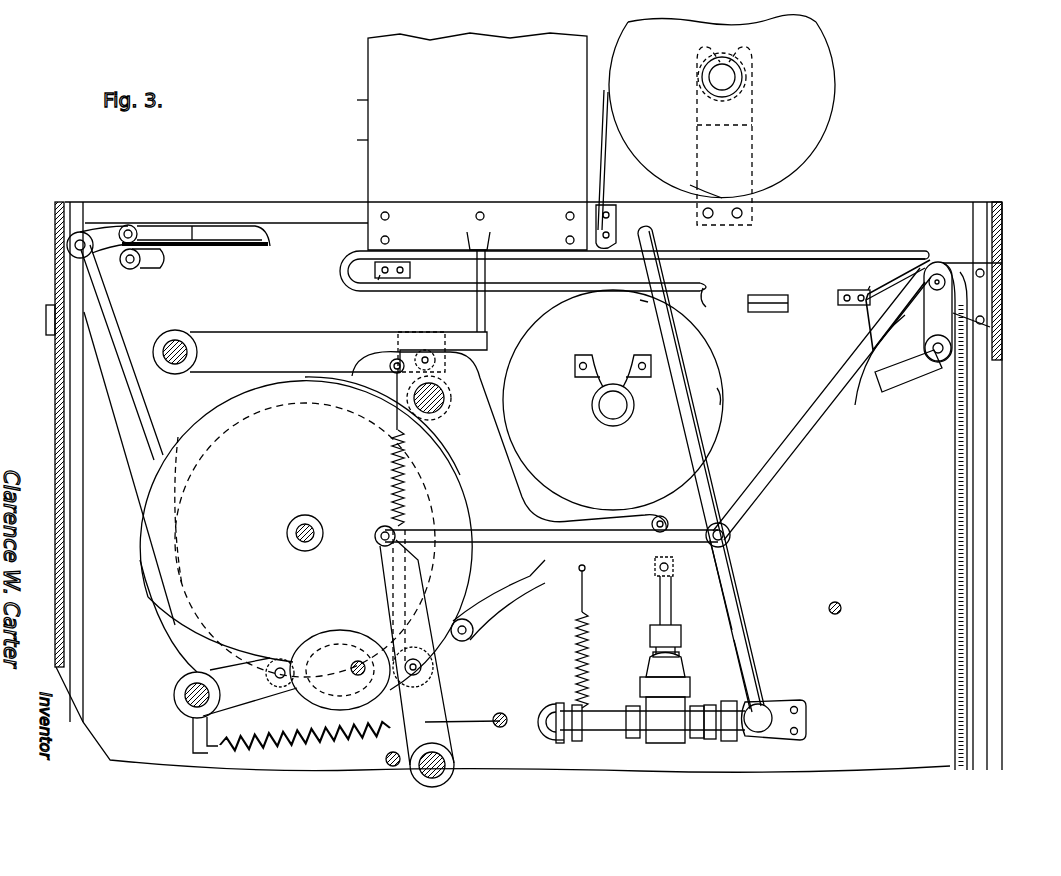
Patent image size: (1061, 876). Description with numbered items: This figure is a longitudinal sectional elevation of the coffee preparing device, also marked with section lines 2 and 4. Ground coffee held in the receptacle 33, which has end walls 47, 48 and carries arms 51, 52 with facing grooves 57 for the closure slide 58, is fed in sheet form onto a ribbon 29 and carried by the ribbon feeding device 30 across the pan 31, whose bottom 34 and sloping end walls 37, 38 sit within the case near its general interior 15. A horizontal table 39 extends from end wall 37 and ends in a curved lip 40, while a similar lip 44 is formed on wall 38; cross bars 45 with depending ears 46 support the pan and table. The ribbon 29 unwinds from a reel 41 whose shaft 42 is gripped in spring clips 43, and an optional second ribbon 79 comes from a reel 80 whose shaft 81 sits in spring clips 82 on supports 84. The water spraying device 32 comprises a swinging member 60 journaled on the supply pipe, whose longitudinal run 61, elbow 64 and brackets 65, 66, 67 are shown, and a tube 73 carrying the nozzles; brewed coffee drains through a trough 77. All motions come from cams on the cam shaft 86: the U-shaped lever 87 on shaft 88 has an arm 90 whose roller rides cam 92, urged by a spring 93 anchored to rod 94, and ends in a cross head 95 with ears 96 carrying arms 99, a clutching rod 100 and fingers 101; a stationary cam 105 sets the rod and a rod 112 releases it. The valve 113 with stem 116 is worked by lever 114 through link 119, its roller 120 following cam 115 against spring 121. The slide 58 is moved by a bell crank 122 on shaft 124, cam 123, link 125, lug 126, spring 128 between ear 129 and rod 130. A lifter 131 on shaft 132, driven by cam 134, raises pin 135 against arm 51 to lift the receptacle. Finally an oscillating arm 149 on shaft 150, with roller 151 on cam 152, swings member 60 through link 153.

The section line 2 is at (5, 215).
The section line 4 is at (760, 205).
The disc 15 is at (613, 400).
The ribbon 29 is at (420, 291).
The ribbon feeding device 30 is at (872, 338).
The pan 31 is at (840, 262).
The water spraying device 32 is at (750, 613).
The receptacle 33 is at (352, 100).
The bottom 34 is at (713, 305).
The end wall 37 is at (645, 300).
The end wall 38 is at (893, 260).
The table 39 is at (522, 260).
The curved lip 40 is at (338, 269).
The reel 41 is at (717, 388).
The shaft 42 is at (630, 416).
The spring clips 43 is at (592, 402).
The lip 44 is at (931, 258).
The cross bars 45 is at (410, 270).
The depending ears 46 is at (378, 280).
The end wall 47 is at (587, 124).
The end wall 48 is at (352, 140).
The arm 51 is at (425, 216).
The arm 52 is at (240, 228).
The grooves 57 is at (192, 226).
The slide 58 is at (258, 240).
The swinging member 60 is at (735, 578).
The longitudinal run 61 is at (606, 735).
The elbow 64 is at (541, 738).
The bracket 65 is at (800, 742).
The bracket 66 is at (720, 738).
The bracket 67 is at (563, 742).
The tube 73 is at (712, 422).
The trough 77 is at (788, 304).
The second ribbon 79 is at (606, 160).
The reel 80 is at (808, 142).
The shaft 81 is at (736, 77).
The spring clips 82 is at (752, 110).
The supports 84 is at (722, 193).
The cam shaft 86 is at (296, 533).
The U-shaped lever 87 is at (806, 446).
The shaft 88 is at (442, 392).
The arm 90 is at (406, 366).
The cam 92 is at (160, 495).
The spring 93 is at (390, 470).
The rod 94 is at (386, 759).
The cross head 95 is at (880, 362).
The ears 96 is at (935, 362).
The arms 99 is at (988, 312).
The rod 100 is at (990, 263).
The finger 101 is at (890, 375).
The stationary cam 105 is at (990, 289).
The rod 112 is at (845, 608).
The valve 113 is at (650, 670).
The lever 114 is at (515, 576).
The cam 115 is at (305, 540).
The valve stem 116 is at (659, 600).
The link 119 is at (652, 570).
The roller 120 is at (476, 630).
The spring 121 is at (576, 632).
The bell crank 122 is at (105, 298).
The cam 123 is at (165, 612).
The shaft 124 is at (185, 695).
The link 125 is at (98, 230).
The lug 126 is at (130, 225).
The spring 128 is at (262, 742).
The ear 129 is at (192, 732).
The rod 130 is at (505, 710).
The lifter 131 is at (400, 340).
The shaft 132 is at (178, 345).
The cam 134 is at (140, 568).
The pin 135 is at (485, 304).
The oscillating arm 149 is at (445, 712).
The shaft 150 is at (452, 765).
The roller 151 is at (434, 668).
The cam 152 is at (350, 633).
The link 153 is at (572, 535).